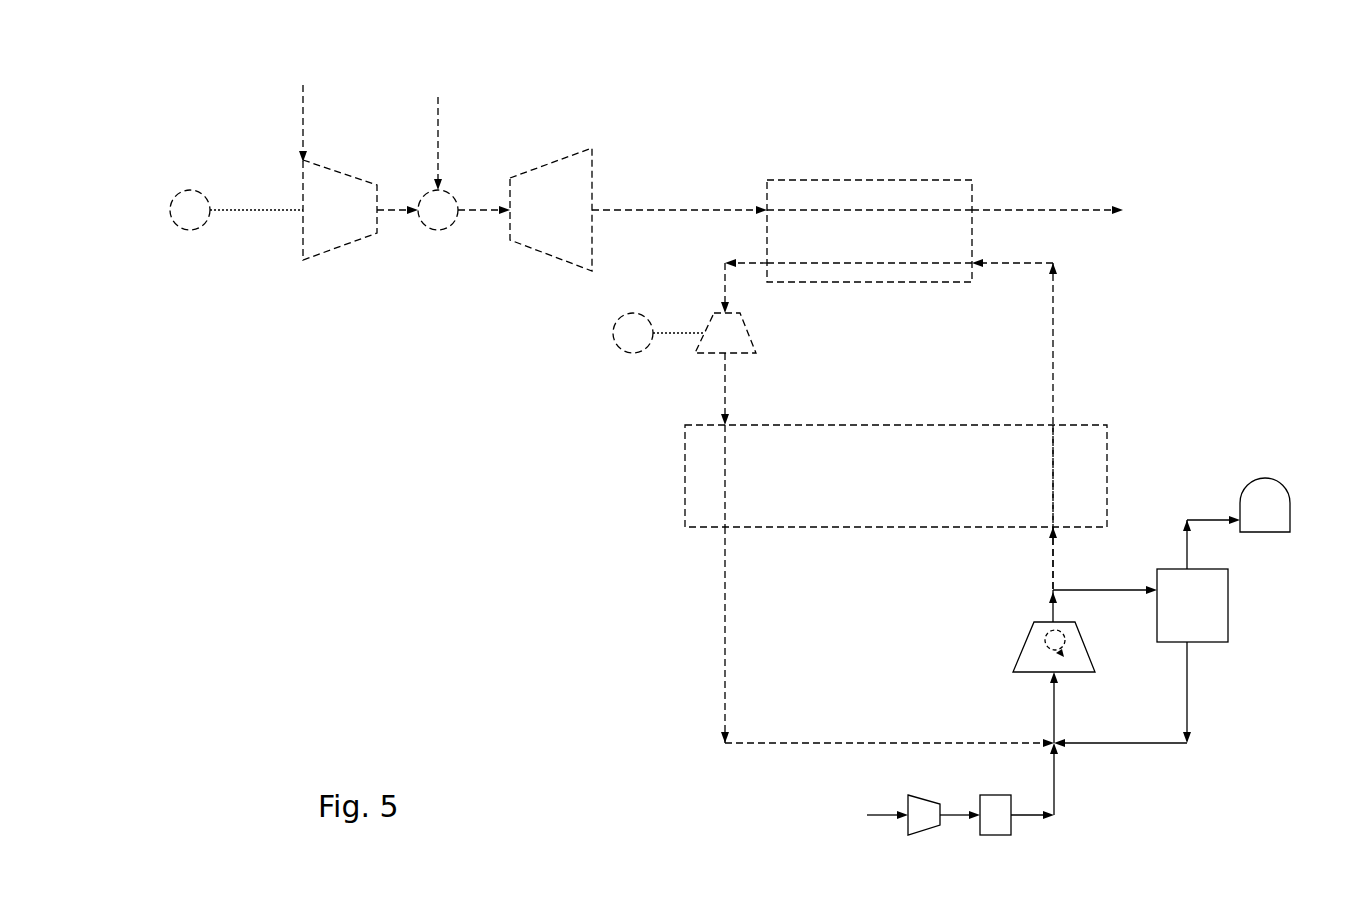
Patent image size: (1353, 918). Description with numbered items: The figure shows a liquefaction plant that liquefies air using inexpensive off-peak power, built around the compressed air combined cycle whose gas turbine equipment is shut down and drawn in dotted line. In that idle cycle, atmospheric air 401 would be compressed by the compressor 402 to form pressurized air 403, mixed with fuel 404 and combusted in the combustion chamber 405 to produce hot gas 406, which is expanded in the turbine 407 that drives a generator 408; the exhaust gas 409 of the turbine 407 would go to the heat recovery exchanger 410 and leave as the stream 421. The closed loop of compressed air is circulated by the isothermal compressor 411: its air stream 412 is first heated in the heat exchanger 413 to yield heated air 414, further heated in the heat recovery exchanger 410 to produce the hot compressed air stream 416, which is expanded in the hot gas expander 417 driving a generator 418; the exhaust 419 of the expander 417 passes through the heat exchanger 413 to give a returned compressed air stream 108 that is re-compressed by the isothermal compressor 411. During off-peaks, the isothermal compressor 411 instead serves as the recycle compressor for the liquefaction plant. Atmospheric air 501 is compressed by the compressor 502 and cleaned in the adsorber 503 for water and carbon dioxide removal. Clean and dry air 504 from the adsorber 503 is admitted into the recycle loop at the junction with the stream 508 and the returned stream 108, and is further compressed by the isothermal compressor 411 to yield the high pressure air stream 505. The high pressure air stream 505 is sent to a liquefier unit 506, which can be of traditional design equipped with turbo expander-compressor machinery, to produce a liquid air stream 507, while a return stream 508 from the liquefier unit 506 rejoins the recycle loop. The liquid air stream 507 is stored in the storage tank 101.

The atmospheric air 401 is at (300, 115).
The compressor 402 is at (313, 240).
The pressurized air 403 is at (397, 207).
The fuel 404 is at (438, 138).
The combustion chamber 405 is at (437, 223).
The hot gas 406 is at (470, 218).
The turbine 407 is at (540, 242).
The generator 408 is at (178, 222).
The exhaust gas 409 is at (665, 208).
The heat recovery exchanger 410 is at (870, 190).
The cooled exhaust stream 421 is at (1045, 210).
The heated air 414 is at (1057, 333).
The hot compressed air stream 416 is at (725, 280).
The hot gas expander 417 is at (735, 333).
The generator 418 is at (622, 347).
The exhaust 419 is at (727, 395).
The heat exchanger 413 is at (705, 487).
The air stream 412 is at (1055, 560).
The isothermal compressor 411 is at (1033, 650).
The returned compressed air stream 108 is at (847, 743).
The high pressure air stream 505 is at (1125, 592).
The liquefier unit 506 is at (1218, 590).
The liquid air stream 507 is at (1210, 517).
The storage tank 101 is at (1268, 490).
The recycle stream 508 is at (1165, 742).
The clean and dry air 504 is at (1053, 762).
The atmospheric air 501 is at (875, 804).
The compressor 502 is at (930, 813).
The adsorber 503 is at (1002, 825).